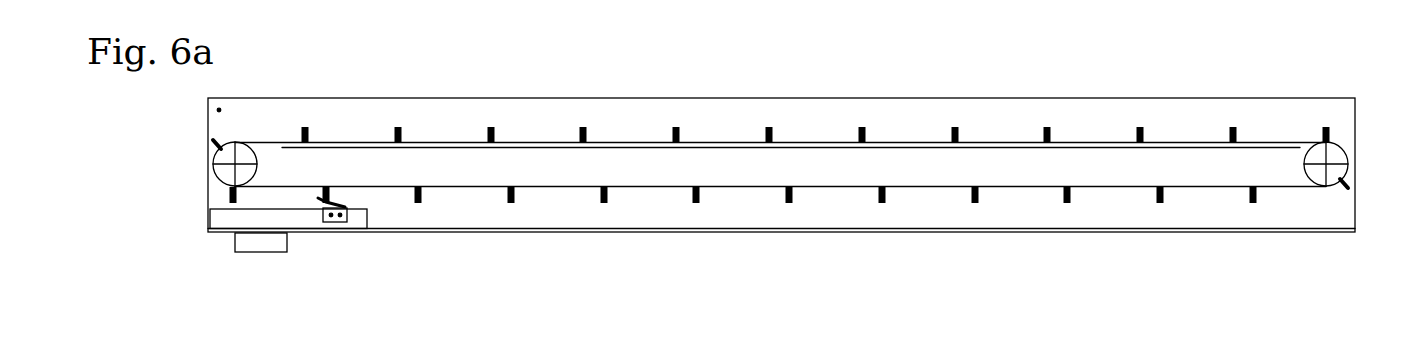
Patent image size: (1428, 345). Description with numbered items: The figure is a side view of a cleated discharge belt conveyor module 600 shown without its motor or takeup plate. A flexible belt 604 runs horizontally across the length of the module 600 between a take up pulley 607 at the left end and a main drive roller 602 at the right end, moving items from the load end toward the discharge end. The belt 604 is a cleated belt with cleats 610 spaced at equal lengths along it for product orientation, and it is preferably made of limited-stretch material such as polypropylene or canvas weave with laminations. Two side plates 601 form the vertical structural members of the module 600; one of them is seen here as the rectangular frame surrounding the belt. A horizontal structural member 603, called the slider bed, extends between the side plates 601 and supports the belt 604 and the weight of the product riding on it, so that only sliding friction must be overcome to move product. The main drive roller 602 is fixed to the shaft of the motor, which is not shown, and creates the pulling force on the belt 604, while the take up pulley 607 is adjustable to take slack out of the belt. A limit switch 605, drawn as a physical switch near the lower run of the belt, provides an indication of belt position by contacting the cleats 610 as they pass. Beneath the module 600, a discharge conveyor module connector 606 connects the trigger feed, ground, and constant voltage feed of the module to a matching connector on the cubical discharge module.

The cleated discharge belt conveyor module 600 is at (180, 232).
The side plate 601 is at (781, 137).
The main drive roller 602 is at (1362, 139).
The horizontal structural member (slider bed) 603 is at (780, 222).
The belt 604 is at (780, 243).
The limit switch 605 is at (389, 238).
The discharge conveyor module connector (plug) 606 is at (374, 272).
The take up pulley 607 is at (200, 143).
The cleats 610 is at (590, 190).